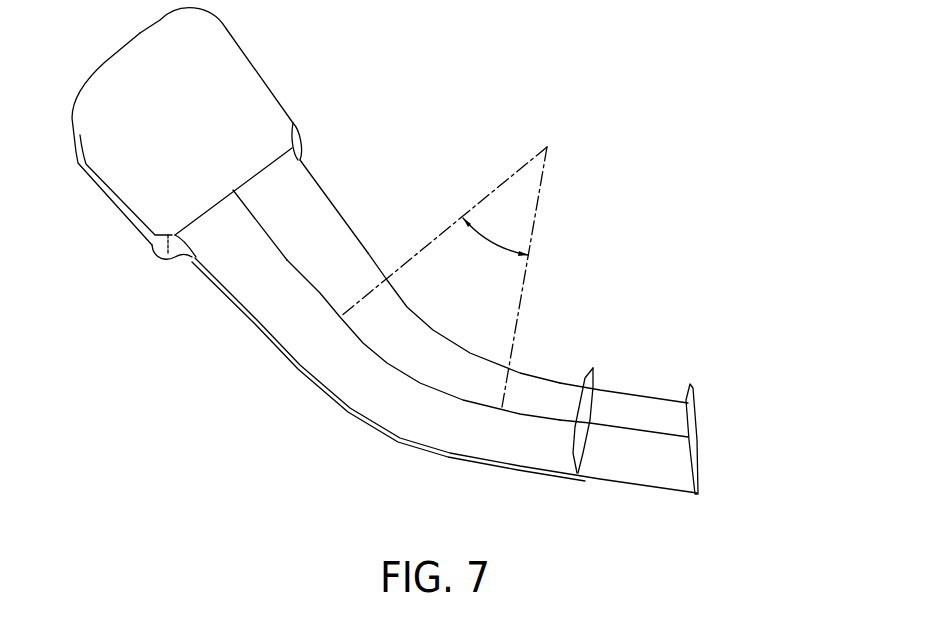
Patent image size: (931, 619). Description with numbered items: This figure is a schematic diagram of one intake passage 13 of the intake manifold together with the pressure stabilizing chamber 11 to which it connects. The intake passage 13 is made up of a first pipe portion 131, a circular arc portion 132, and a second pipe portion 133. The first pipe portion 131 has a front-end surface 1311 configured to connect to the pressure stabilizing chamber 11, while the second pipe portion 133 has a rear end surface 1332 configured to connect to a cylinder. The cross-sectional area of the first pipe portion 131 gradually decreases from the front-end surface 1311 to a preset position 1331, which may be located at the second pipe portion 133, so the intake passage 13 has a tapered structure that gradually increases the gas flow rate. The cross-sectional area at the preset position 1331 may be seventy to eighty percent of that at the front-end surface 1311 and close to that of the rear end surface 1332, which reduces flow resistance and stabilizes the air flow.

The pressure stabilizing chamber 11 is at (185, 108).
The front-end surface 1311 is at (210, 228).
The intake passage 13 is at (357, 390).
The first pipe portion 131 is at (307, 227).
The circular arc portion 132 is at (423, 350).
The second pipe portion 133 is at (628, 405).
The preset position 1331 is at (587, 456).
The rear end surface 1332 is at (704, 441).